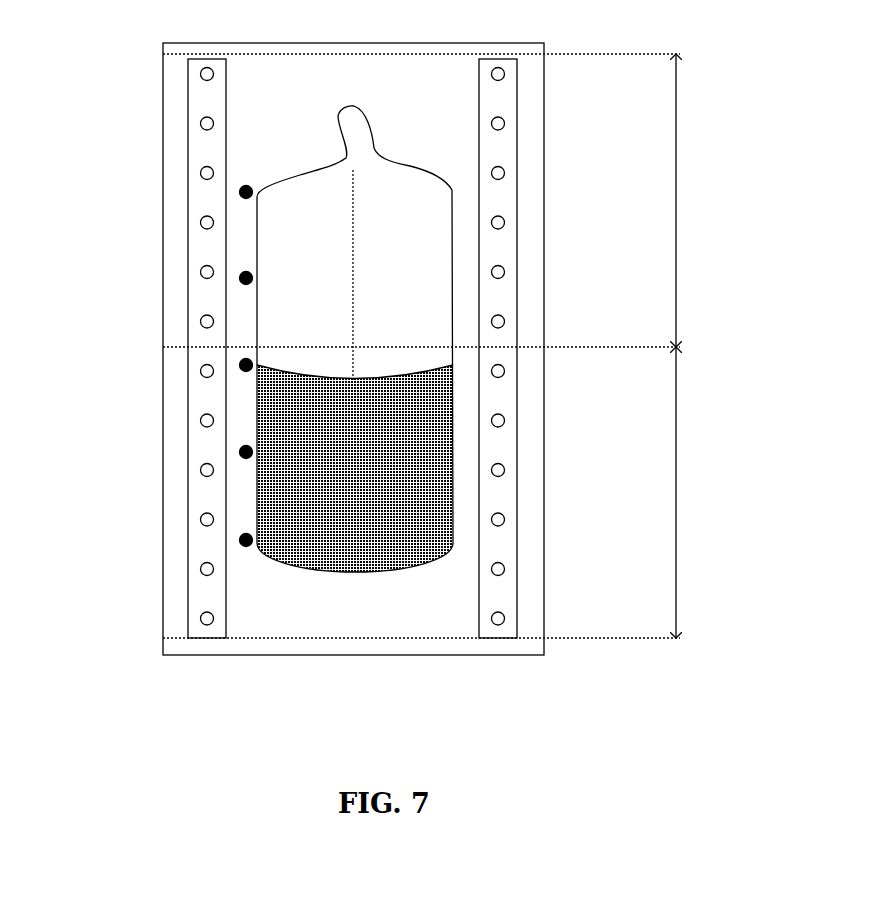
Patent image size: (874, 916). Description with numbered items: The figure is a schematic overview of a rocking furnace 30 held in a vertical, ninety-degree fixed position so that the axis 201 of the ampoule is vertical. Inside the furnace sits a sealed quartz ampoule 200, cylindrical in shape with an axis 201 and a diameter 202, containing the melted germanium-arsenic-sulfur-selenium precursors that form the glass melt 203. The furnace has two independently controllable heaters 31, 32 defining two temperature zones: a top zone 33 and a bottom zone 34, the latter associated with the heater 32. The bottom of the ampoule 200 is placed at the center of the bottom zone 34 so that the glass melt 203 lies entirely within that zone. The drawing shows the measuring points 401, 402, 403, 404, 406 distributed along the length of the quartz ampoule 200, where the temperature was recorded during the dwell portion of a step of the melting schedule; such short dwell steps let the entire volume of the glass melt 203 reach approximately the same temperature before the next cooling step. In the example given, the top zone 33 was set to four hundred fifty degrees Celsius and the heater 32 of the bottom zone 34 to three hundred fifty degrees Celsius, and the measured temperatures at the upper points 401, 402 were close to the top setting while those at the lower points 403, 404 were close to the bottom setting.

The rocking furnace 30 is at (544, 247).
The heater 31 is at (495, 199).
The heater 32 is at (500, 537).
The top zone 33 is at (694, 200).
The bottom zone 34 is at (694, 492).
The sealed quartz ampoule 200 is at (453, 293).
The axis 201 is at (353, 275).
The diameter 202 is at (422, 395).
The glass melt 203 is at (422, 470).
The measuring point 401 is at (246, 192).
The measuring point 402 is at (242, 274).
The measuring point 403 is at (242, 363).
The measuring point 404 is at (242, 449).
The sensor 406 is at (242, 542).